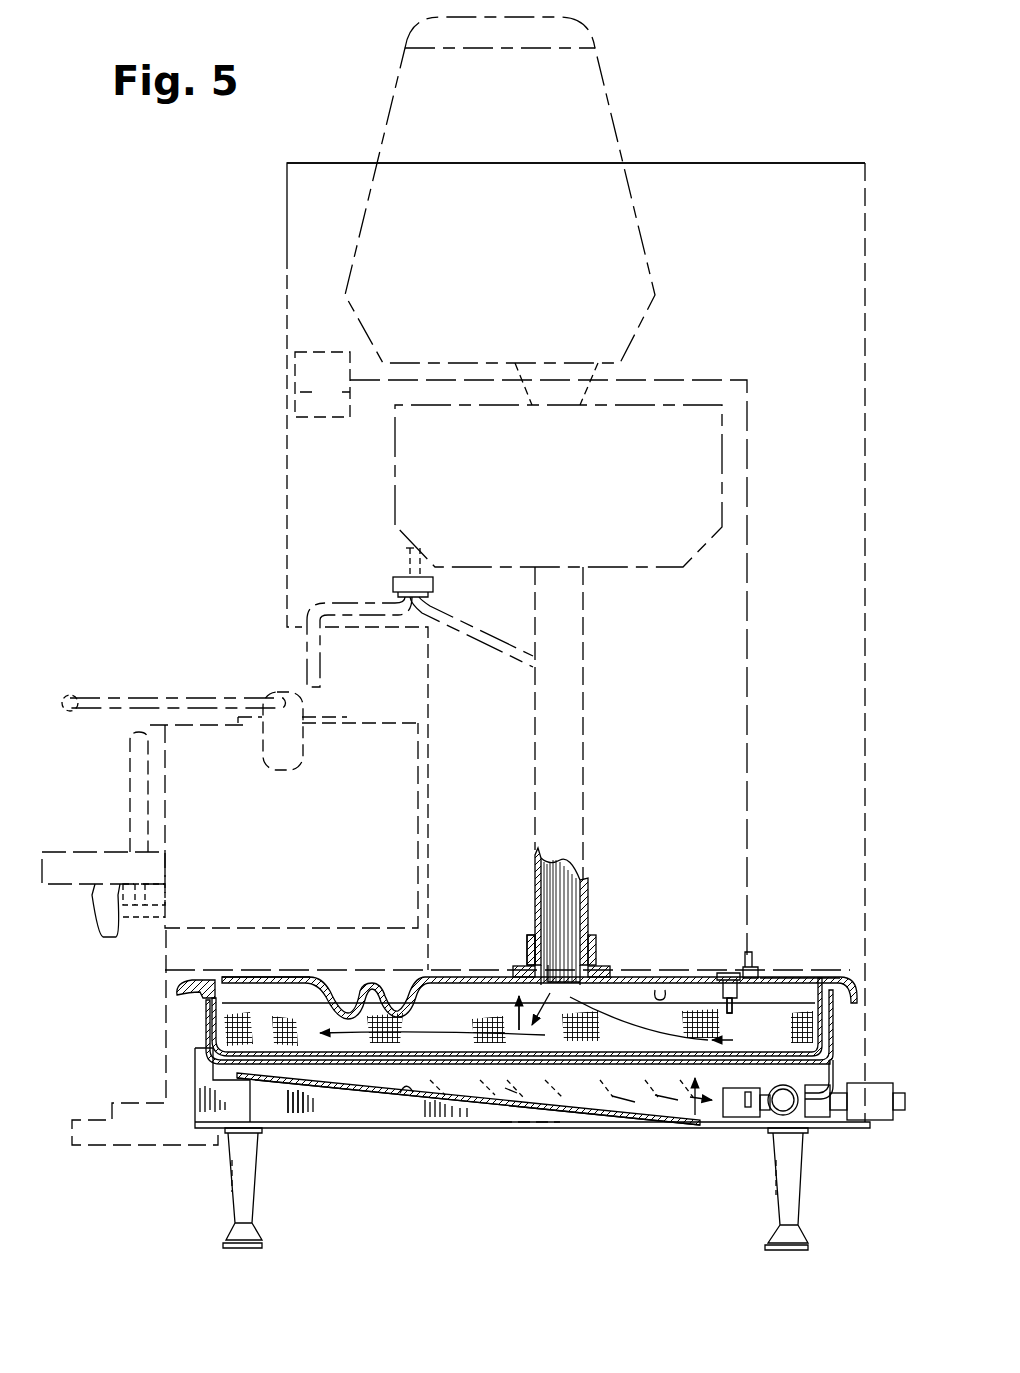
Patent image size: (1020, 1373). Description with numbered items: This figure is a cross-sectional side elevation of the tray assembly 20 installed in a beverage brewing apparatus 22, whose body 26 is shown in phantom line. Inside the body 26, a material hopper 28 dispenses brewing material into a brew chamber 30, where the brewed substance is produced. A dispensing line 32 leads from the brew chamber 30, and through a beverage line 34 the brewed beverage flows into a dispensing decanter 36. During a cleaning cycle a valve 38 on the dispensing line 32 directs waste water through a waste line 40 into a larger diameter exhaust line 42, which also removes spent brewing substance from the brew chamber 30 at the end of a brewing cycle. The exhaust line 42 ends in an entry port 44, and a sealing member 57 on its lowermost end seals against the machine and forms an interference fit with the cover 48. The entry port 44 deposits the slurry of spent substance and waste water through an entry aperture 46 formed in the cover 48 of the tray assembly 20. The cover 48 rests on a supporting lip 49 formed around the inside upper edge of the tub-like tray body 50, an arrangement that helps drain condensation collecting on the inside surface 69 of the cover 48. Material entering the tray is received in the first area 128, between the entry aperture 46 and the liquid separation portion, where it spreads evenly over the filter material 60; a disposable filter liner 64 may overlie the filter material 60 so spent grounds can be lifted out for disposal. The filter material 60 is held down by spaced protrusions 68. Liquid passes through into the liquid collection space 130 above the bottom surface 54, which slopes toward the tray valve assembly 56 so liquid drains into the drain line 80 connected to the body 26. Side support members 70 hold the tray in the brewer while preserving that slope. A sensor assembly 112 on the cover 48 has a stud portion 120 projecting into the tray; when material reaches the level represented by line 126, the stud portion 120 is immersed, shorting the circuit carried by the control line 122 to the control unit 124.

The tray assembly 20 is at (781, 887).
The beverage brewing apparatus 22 is at (146, 249).
The body 26 is at (286, 244).
The material hopper 28 is at (386, 128).
The brew chamber 30 is at (700, 405).
The dispensing line 32 is at (406, 548).
The beverage line 34 is at (306, 660).
The dispensing decanter 36 is at (148, 728).
The valve 38 is at (392, 582).
The waste line 40 is at (507, 650).
The exhaust line 42 is at (588, 885).
The entry port 44 is at (526, 950).
The entry aperture 46 is at (599, 973).
The cover 48 is at (683, 977).
The supporting lip 49 is at (226, 983).
The tray body 50 is at (210, 1038).
The bottom surface 54 is at (412, 1092).
The tray valve assembly 56 is at (767, 1120).
The sealing member 57 is at (524, 937).
The filter material 60 is at (367, 1077).
The filter liner 64 is at (213, 1030).
The protrusions 68 is at (326, 1073).
The inside surface 69 is at (660, 990).
The side support members 70 is at (193, 1107).
The drain line 80 is at (880, 1120).
The sensor assembly 112 is at (722, 955).
The stud portion 120 is at (733, 1011).
The control line 122 is at (745, 797).
The control unit 124 is at (293, 392).
The level line 126 is at (783, 977).
The first area 128 is at (517, 1030).
The liquid collection space 130 is at (700, 1105).